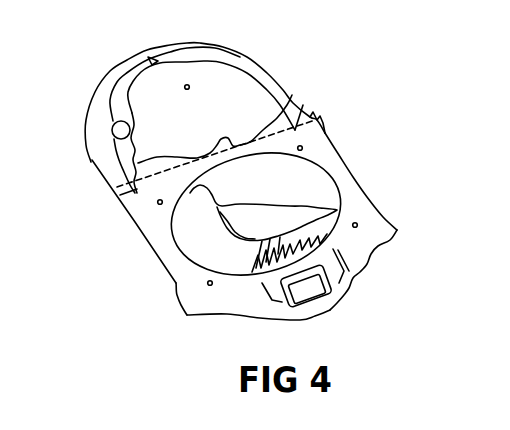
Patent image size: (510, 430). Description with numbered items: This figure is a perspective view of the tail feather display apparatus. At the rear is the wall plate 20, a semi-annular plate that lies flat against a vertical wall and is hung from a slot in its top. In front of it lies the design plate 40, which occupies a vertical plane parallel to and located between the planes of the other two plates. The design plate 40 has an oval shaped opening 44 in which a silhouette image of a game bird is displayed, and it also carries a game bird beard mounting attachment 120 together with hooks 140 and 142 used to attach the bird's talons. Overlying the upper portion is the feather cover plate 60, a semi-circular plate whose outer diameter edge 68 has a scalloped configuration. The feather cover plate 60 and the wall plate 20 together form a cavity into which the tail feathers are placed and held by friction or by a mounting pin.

The wall plate 20 is at (105, 83).
The feather cover plate 60 is at (238, 100).
The outer diameter edge 68 is at (113, 126).
The design plate 40 is at (325, 162).
The oval shaped opening 44 is at (236, 188).
The hook 142 is at (372, 265).
The game bird beard mounting attachment 120 is at (302, 283).
The hook 140 is at (263, 284).